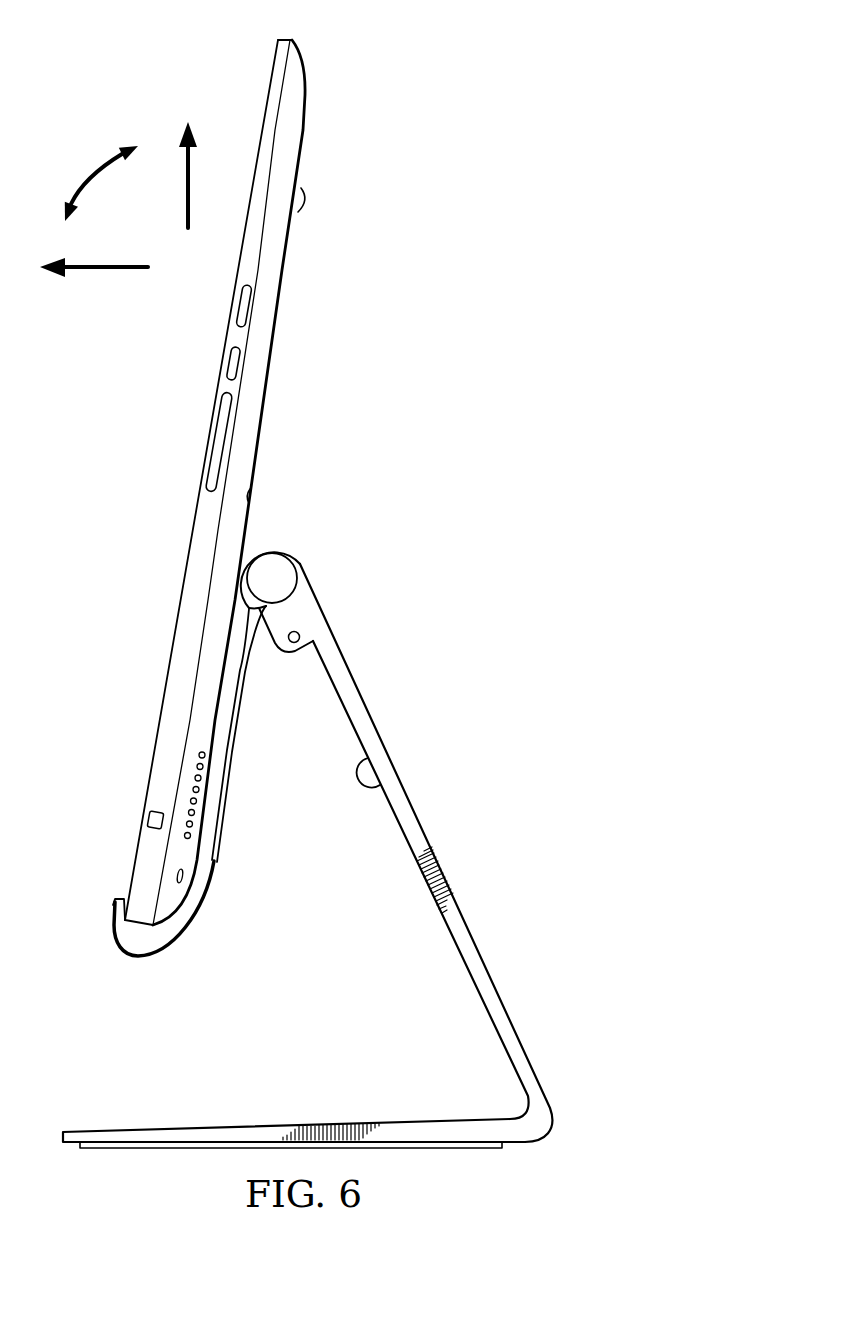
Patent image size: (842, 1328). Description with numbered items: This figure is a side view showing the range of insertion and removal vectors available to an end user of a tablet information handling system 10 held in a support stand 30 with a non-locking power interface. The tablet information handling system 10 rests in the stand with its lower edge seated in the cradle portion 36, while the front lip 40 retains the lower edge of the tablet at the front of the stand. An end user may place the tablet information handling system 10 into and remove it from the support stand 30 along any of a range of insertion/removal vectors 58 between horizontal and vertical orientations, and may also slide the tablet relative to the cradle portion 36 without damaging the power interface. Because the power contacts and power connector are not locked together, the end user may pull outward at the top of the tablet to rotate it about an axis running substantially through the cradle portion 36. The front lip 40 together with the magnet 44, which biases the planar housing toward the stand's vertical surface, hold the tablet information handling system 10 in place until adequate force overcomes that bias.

The tablet information handling system 10 is at (334, 139).
The support stand 30 is at (418, 815).
The cradle portion 36 is at (128, 957).
The front lip 40 is at (125, 899).
The magnet 44 is at (232, 760).
The insertion/removal vectors 58 is at (93, 172).